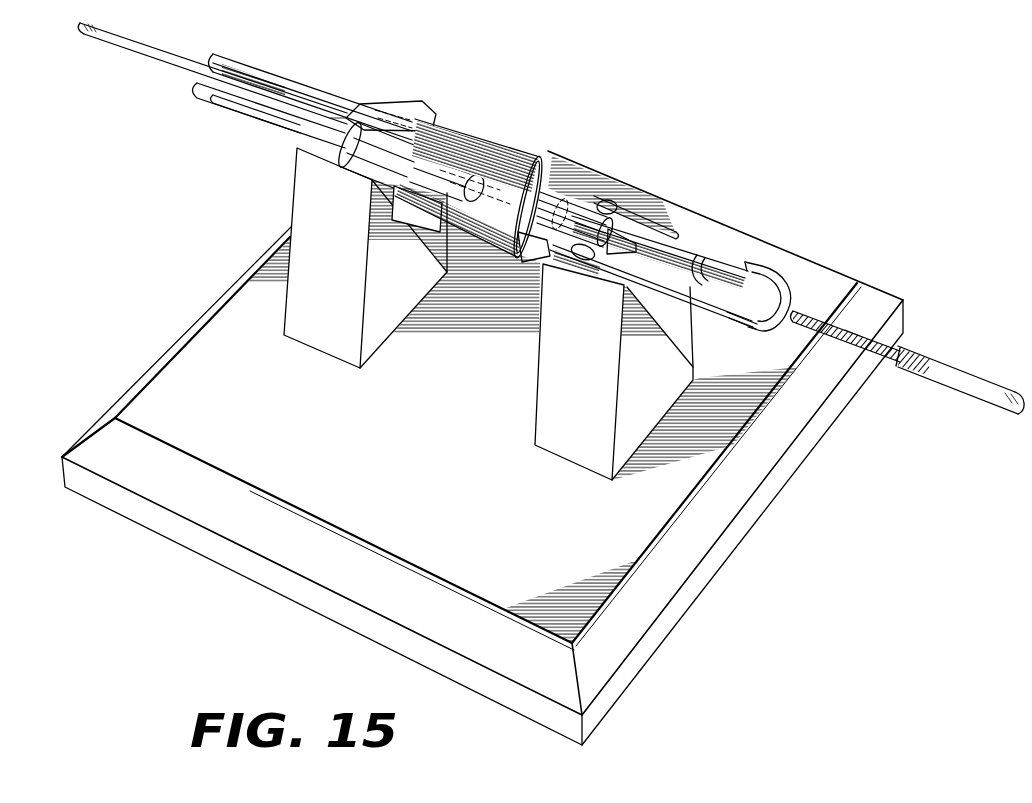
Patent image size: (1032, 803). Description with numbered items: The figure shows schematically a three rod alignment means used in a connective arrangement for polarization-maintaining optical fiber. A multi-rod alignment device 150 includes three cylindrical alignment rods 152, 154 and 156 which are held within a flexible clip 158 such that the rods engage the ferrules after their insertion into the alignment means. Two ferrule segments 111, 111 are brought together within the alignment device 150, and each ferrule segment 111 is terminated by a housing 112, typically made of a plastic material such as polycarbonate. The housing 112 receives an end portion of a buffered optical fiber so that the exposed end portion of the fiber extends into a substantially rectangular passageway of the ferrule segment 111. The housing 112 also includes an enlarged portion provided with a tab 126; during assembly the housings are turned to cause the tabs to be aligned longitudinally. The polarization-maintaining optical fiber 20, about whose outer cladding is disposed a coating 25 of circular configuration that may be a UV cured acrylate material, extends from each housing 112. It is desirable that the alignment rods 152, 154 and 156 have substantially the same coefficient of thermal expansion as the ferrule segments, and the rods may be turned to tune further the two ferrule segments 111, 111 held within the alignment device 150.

The polarization-maintaining optical fiber 20 is at (333, 130).
The coating 25 is at (129, 46).
The ferrule segment 111 is at (350, 118).
The housing 112 is at (310, 88).
The tab 126 is at (397, 196).
The multi-rod alignment device 150 is at (437, 192).
The alignment rod 152 is at (546, 160).
The alignment rod 154 is at (528, 256).
The alignment rod 156 is at (585, 184).
The flexible clip 158 is at (458, 138).